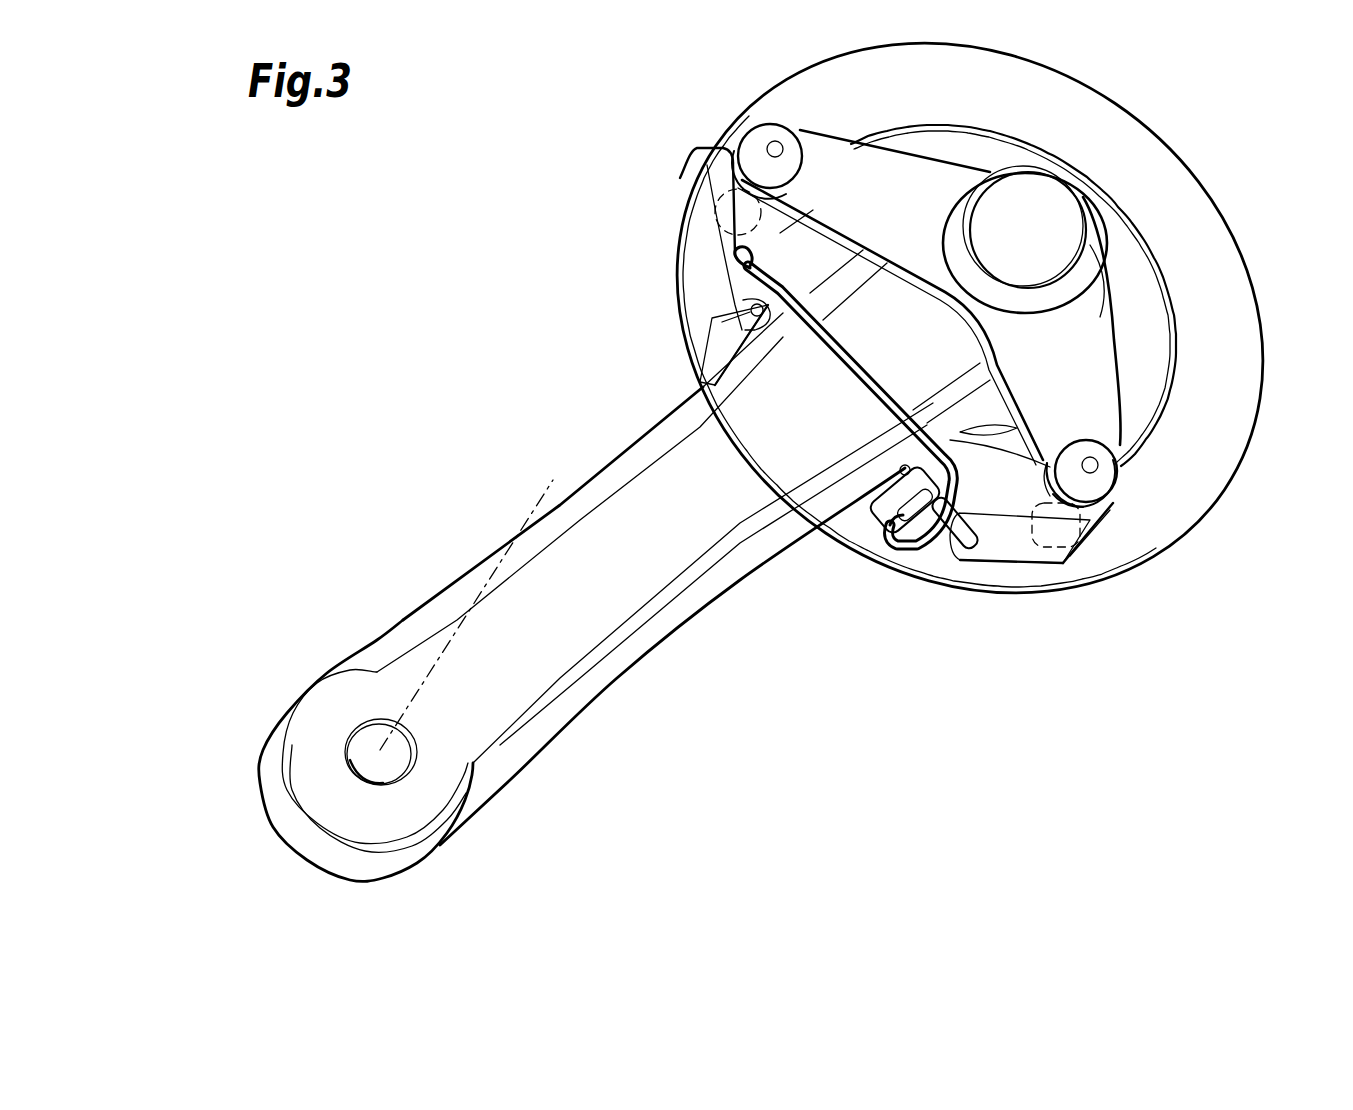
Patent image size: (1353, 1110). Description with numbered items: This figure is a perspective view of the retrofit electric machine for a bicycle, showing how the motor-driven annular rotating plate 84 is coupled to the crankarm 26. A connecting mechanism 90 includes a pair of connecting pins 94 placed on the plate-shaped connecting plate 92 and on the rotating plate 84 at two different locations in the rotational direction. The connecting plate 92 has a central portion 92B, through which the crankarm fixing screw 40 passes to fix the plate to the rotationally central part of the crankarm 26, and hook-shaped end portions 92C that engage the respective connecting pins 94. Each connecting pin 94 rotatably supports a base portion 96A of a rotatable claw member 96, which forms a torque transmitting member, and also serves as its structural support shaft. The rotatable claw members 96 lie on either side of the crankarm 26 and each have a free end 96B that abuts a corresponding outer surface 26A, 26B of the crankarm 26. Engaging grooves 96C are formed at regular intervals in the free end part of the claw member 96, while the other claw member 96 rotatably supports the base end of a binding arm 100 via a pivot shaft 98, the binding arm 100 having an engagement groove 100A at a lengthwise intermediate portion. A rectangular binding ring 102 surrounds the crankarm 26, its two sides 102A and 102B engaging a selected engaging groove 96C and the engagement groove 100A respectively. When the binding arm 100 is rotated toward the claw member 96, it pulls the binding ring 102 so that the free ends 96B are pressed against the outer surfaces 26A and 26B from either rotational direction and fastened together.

The crankarm 26 is at (596, 545).
The outer surface of crankarm 26A is at (626, 448).
The outer surface of crankarm 26B is at (612, 688).
The crankarm fixing screw 40 is at (1074, 218).
The rotating plate 84 is at (1186, 525).
The connecting mechanism 90 is at (963, 580).
The connecting plate 92 is at (961, 349).
The central portion of connecting plate 92B is at (962, 300).
The hook-shaped end portion of connecting plate 92C is at (733, 178).
The connecting pin 94 is at (768, 142).
The rotatable claw member 96 is at (755, 230).
The base portion of rotatable claw member 96A is at (1077, 548).
The free end of rotatable claw member 96B is at (895, 447).
The engaging groove 96C is at (920, 555).
The pivot shaft 98 is at (705, 363).
The binding arm 100 is at (700, 286).
The engagement groove 100A is at (750, 316).
The binding ring 102 is at (844, 391).
The side of binding ring 102A is at (905, 535).
The side of binding ring 102B is at (768, 282).